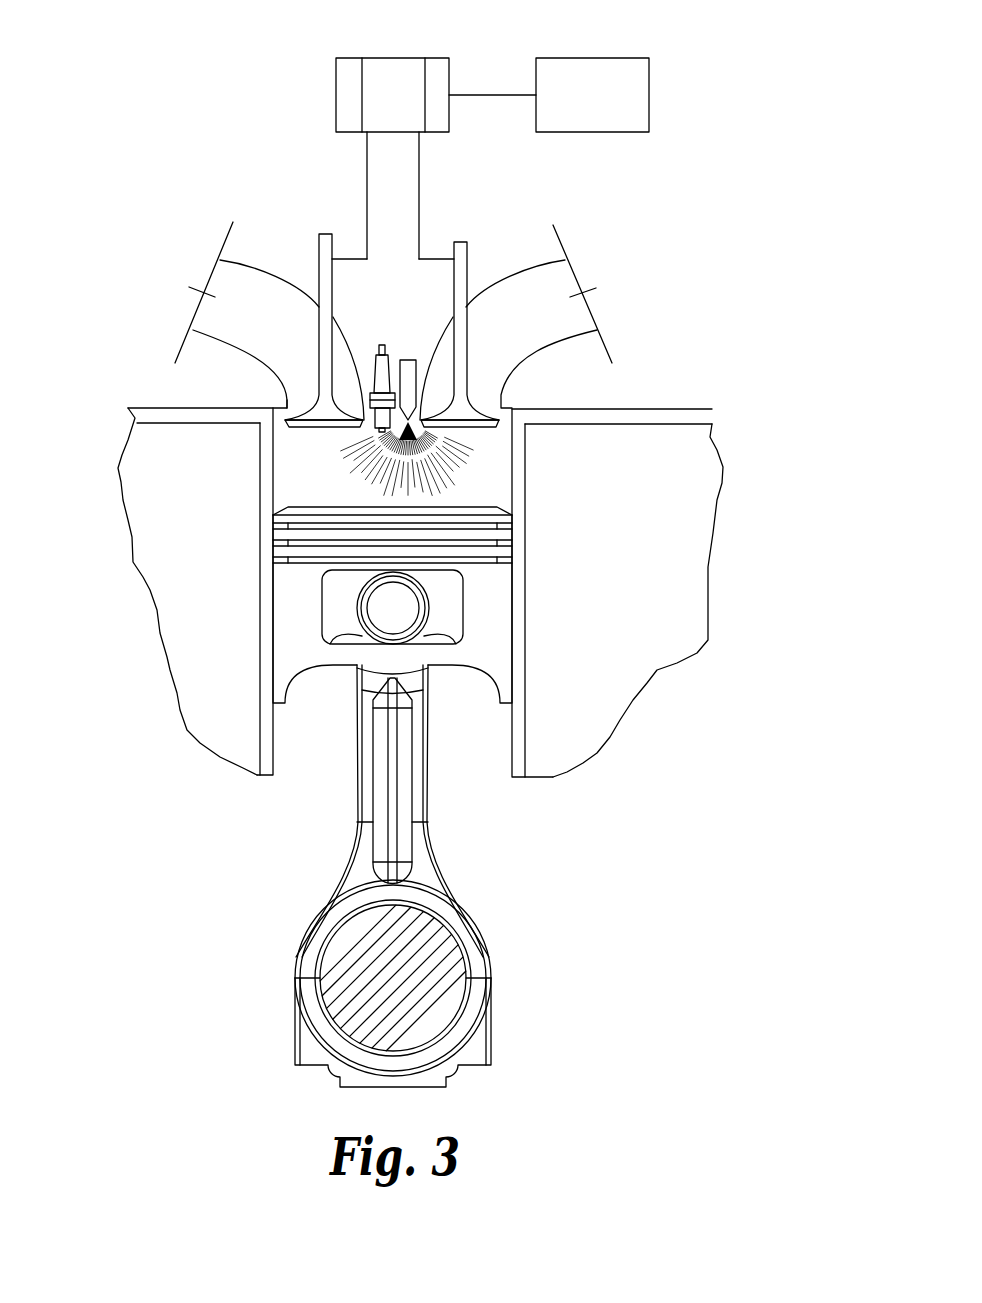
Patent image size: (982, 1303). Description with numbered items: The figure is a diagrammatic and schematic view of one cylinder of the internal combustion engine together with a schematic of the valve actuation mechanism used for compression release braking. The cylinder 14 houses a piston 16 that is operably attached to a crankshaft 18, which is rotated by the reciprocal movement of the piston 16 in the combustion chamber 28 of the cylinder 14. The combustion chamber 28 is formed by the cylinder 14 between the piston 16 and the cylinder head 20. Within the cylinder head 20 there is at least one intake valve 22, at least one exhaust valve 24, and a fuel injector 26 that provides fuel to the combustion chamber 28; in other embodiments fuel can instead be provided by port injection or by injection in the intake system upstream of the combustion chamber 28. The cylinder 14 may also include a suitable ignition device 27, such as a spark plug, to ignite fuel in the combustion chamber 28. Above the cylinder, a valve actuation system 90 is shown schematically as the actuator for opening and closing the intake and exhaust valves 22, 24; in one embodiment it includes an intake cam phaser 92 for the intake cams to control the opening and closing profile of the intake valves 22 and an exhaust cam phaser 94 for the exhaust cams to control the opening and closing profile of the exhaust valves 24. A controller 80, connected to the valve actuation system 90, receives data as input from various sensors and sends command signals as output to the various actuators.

The cylinder 14 is at (210, 464).
The piston 16 is at (485, 592).
The crankshaft 18 is at (420, 937).
The cylinder head 20 is at (653, 410).
The intake valve 22 is at (320, 270).
The exhaust valve 24 is at (466, 267).
The fuel injector 26 is at (418, 360).
The ignition device 27 is at (385, 347).
The combustion chamber 28 is at (492, 458).
The controller 80 is at (605, 109).
The valve actuation system 90 is at (405, 109).
The intake cam phaser 92 is at (347, 72).
The exhaust cam phaser 94 is at (437, 80).